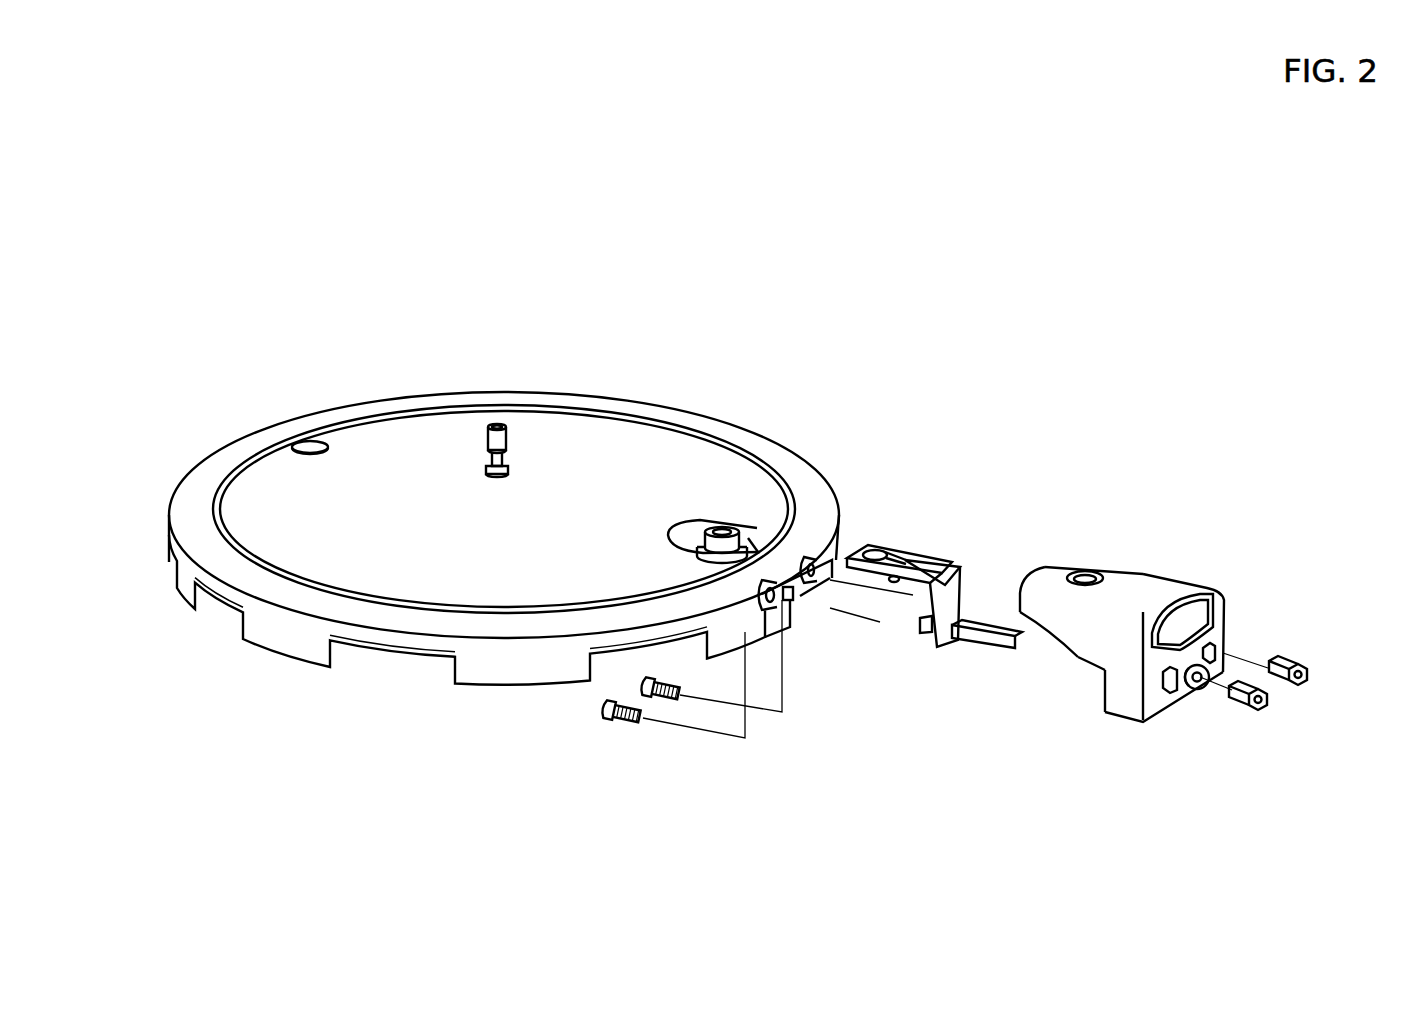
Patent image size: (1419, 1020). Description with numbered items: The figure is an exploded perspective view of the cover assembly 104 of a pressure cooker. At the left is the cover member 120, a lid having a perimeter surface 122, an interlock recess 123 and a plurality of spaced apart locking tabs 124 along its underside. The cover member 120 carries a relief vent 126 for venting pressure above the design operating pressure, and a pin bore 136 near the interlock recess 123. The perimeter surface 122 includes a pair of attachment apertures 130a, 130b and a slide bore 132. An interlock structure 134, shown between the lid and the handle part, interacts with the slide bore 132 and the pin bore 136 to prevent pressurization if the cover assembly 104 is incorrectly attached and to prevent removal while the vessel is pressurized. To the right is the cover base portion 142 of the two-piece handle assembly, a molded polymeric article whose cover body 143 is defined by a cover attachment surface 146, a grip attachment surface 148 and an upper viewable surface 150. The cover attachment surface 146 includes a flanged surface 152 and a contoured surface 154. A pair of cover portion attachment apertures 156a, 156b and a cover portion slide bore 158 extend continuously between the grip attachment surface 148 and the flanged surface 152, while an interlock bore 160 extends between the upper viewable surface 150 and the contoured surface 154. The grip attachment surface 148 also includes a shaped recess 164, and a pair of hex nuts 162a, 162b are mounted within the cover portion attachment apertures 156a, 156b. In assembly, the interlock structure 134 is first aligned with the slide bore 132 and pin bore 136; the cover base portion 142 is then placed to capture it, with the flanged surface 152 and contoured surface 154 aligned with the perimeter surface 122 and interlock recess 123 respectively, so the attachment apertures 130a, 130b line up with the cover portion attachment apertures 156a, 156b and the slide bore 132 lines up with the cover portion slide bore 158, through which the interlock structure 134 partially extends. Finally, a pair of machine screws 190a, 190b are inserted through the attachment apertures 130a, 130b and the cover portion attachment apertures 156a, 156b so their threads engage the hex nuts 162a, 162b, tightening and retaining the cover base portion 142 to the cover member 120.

The cover assembly 104 is at (257, 421).
The cover member 120 is at (417, 430).
The perimeter surface 122 is at (732, 645).
The interlock recess 123 is at (750, 543).
The locking tabs 124 is at (173, 572).
The relief vent 126 is at (503, 437).
The attachment aperture 130a is at (766, 603).
The attachment aperture 130b is at (812, 568).
The slide bore 132 is at (795, 595).
The interlock structure 134 is at (947, 558).
The pin bore 136 is at (720, 527).
The cover base portion 142 is at (1170, 582).
The cover body 143 is at (1200, 591).
The cover attachment surface 146 is at (1078, 660).
The grip attachment surface 148 is at (1147, 708).
The upper viewable surface 150 is at (1123, 593).
The flanged surface 152 is at (1105, 693).
The contoured surface 154 is at (1040, 632).
The cover portion attachment aperture 156a is at (1167, 687).
The cover portion attachment aperture 156b is at (1212, 648).
The cover portion slide bore 158 is at (1212, 680).
The interlock bore 160 is at (1082, 580).
The hex nut 162a is at (1245, 707).
The hex nut 162b is at (1290, 665).
The shaped recess 164 is at (1207, 610).
The machine screw 190a is at (617, 722).
The machine screw 190b is at (667, 697).